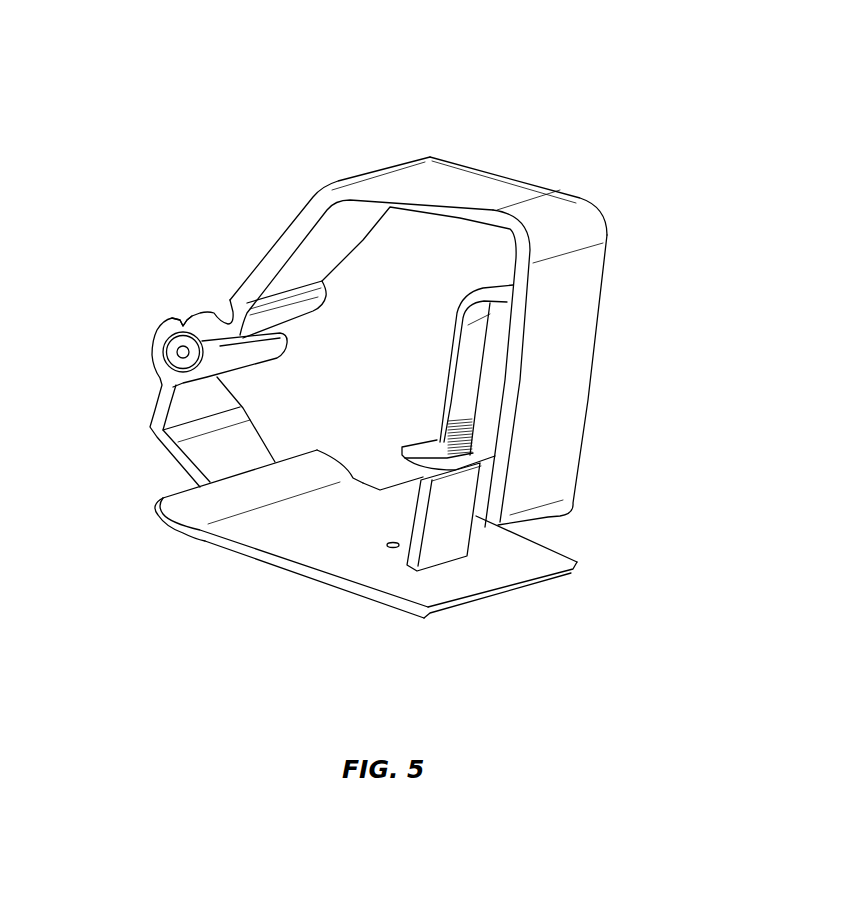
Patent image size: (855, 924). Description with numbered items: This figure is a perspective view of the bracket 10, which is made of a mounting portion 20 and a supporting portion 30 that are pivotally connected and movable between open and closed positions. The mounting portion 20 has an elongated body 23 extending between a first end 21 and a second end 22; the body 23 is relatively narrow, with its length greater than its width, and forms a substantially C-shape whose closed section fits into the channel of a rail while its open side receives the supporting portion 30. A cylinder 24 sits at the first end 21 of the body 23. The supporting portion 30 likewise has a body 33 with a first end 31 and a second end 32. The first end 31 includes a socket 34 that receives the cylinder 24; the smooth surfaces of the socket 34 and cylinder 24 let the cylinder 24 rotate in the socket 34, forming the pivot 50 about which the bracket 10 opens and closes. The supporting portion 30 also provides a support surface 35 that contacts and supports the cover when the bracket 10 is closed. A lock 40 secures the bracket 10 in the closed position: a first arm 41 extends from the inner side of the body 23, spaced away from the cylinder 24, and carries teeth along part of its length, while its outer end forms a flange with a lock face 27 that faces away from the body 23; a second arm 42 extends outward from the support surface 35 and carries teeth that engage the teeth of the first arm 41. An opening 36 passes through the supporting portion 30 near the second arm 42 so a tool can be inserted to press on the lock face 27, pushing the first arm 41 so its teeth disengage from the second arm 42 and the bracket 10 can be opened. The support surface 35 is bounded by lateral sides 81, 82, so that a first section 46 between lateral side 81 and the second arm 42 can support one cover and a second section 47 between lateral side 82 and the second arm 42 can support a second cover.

The bracket 10 is at (627, 97).
The mounting portion 20 is at (303, 224).
The first end 21 is at (184, 342).
The second end 22 is at (550, 517).
The elongated body 23 is at (557, 210).
The cylinder 24 is at (162, 390).
The lock face 27 is at (490, 453).
The supporting portion 30 is at (298, 567).
The first end 31 is at (180, 320).
The second end 32 is at (520, 583).
The body 33 is at (342, 560).
The socket 34 is at (160, 334).
The support surface 35 is at (283, 530).
The opening 36 is at (396, 550).
The lock 40 is at (425, 340).
The first arm 41 is at (455, 356).
The second arm 42 is at (357, 517).
The first section 46 is at (297, 540).
The second section 47 is at (530, 559).
The pivot 50 is at (127, 333).
The lateral side 81 is at (380, 570).
The lateral side 82 is at (347, 491).